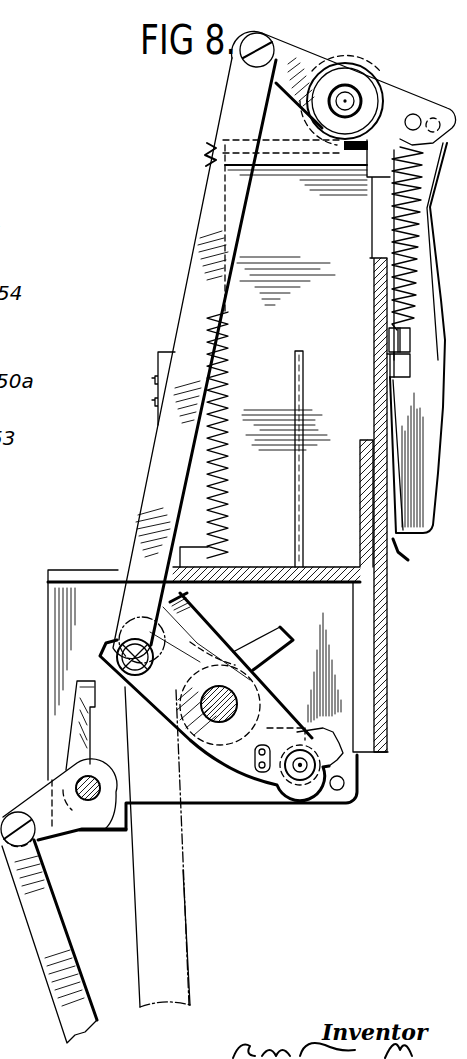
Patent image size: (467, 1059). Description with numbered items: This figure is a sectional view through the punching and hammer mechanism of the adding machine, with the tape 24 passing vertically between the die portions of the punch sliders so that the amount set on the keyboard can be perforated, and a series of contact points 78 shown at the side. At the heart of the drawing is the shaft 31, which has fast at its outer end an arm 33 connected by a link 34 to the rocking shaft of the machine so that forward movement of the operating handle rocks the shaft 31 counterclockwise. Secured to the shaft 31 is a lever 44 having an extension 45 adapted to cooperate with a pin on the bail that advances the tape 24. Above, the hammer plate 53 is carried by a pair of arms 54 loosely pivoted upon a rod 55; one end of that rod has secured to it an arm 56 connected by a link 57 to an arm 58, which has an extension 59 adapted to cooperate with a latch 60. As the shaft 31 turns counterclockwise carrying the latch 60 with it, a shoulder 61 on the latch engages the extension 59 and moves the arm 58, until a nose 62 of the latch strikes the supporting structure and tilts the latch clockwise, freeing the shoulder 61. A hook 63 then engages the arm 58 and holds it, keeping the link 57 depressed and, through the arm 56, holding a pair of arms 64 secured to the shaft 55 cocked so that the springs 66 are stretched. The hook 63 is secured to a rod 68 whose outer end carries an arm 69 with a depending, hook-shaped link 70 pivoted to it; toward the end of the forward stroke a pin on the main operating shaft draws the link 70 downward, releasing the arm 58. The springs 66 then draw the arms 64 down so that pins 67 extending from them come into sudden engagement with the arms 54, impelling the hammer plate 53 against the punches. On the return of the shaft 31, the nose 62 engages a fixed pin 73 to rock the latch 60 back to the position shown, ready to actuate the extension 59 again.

The tape 24 is at (300, 452).
The shaft 31 is at (234, 702).
The arm 33 is at (193, 641).
The link 34 is at (186, 851).
The lever 44 is at (195, 742).
The extension 45 is at (188, 601).
The hammer plate 53 is at (397, 548).
The arms 54 is at (423, 314).
The rod 55 is at (347, 99).
The arm 56 is at (293, 62).
The link 57 is at (200, 298).
The arm 58 is at (143, 687).
The extension 59 is at (284, 631).
The latch 60 is at (323, 738).
The shoulder 61 is at (307, 728).
The nose 62 is at (338, 765).
The hook 63 is at (83, 690).
The arms 64 is at (2, 74).
The springs 66 is at (372, 207).
The pins 67 is at (437, 112).
The rod 68 is at (84, 786).
The arm 69 is at (48, 833).
The link 70 is at (48, 906).
The fixed pin 73 is at (335, 791).
The contact points 78 is at (157, 400).